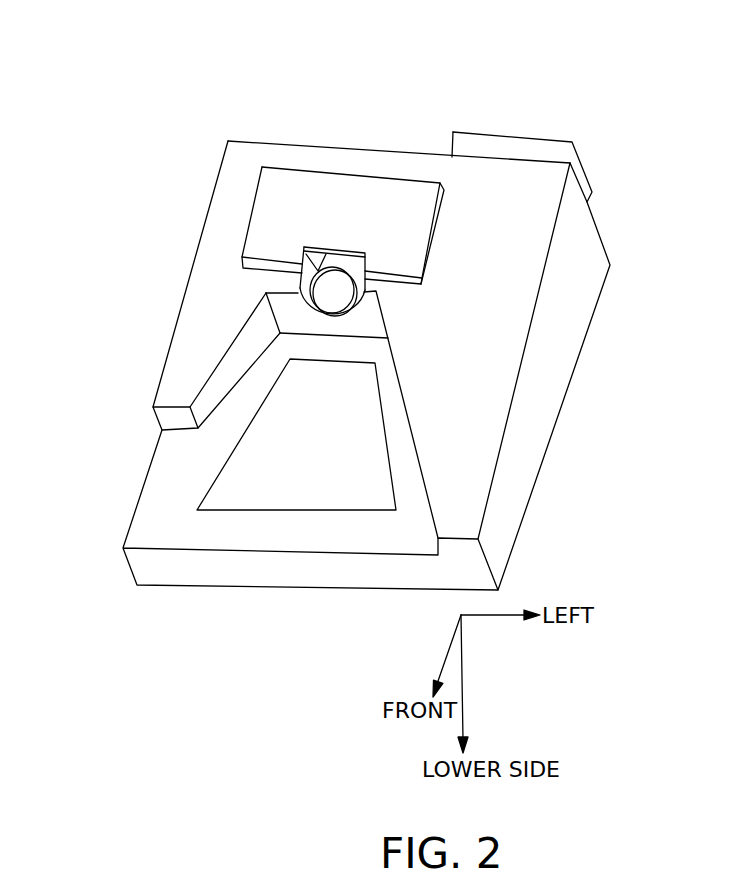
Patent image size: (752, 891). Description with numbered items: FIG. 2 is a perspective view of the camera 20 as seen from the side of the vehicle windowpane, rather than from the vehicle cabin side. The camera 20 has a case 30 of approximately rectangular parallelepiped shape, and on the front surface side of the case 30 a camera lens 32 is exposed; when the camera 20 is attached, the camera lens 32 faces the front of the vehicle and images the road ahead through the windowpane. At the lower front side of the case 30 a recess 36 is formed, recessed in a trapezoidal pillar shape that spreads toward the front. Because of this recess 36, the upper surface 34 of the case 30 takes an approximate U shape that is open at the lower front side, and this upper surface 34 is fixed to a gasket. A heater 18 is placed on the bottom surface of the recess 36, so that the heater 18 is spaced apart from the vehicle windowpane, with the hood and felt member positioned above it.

The camera 20 is at (346, 350).
The case 30 is at (508, 452).
The camera lens 32 is at (335, 295).
The upper surface 34 is at (467, 350).
The recess 36 is at (170, 486).
The heater 18 is at (252, 462).